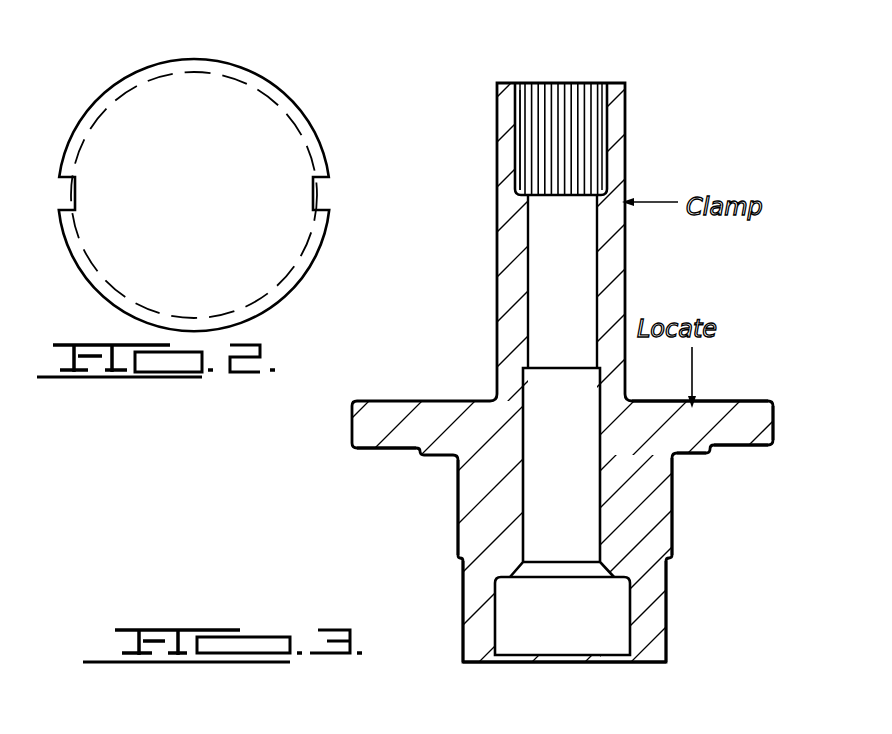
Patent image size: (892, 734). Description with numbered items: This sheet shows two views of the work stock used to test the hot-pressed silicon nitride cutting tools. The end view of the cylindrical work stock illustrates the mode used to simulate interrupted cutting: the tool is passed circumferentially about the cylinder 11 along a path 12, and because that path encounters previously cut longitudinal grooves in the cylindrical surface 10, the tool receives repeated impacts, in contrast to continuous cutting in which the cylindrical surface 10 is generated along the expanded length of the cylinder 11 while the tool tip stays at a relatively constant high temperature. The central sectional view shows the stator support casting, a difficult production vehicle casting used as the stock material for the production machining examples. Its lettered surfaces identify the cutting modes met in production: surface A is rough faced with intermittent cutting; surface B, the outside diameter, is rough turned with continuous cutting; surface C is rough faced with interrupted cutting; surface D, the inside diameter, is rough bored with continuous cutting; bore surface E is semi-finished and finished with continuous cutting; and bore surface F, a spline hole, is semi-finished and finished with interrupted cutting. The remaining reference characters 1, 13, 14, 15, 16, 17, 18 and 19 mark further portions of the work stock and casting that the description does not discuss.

In FIG. 2, the clamp ring 1 is at (263, 80).
In FIG. 3, the cylindrical surface 10 is at (626, 250).
In FIG. 3, the cylinder 11 is at (597, 268).
In FIG. 3, the path 12 is at (595, 97).
In FIG. 3, the flange top locating surface 13 is at (725, 400).
In FIG. 3, the flange underside 14 is at (758, 447).
In FIG. 3, the step shoulder 15 is at (700, 456).
In FIG. 3, the flange outer edge 16 is at (774, 415).
In FIG. 3, the lower body wall 17 is at (667, 608).
In FIG. 3, the body wall 18 is at (672, 540).
In FIG. 3, the left step shoulder 19 is at (447, 483).
In FIG. 3, the surface A is at (464, 669).
In FIG. 3, the surface B is at (455, 579).
In FIG. 3, the surface C is at (373, 453).
In FIG. 3, the surface D is at (626, 612).
In FIG. 3, the bore surface E is at (534, 340).
In FIG. 3, the bore surface F is at (523, 96).